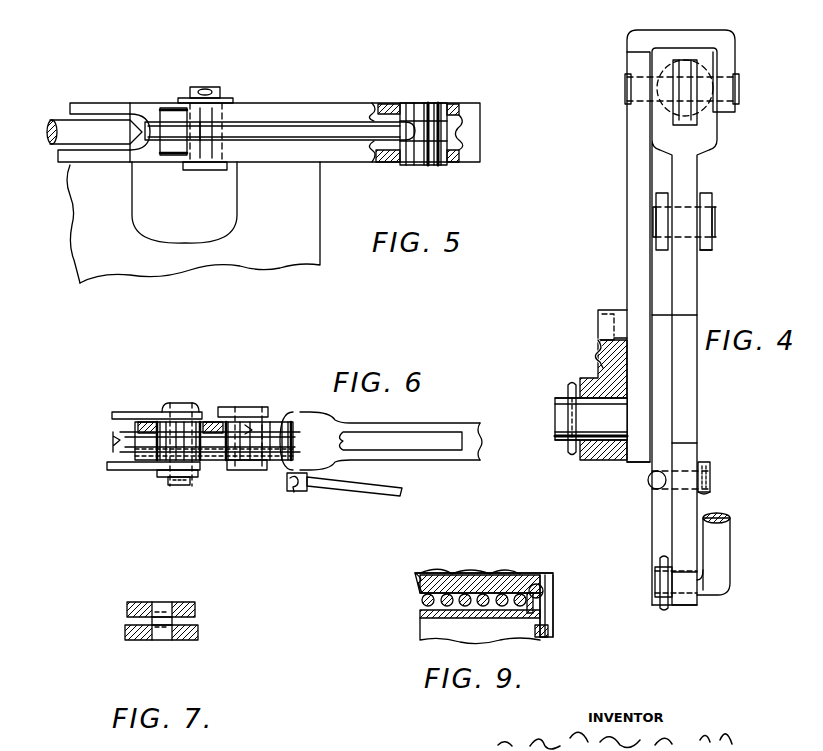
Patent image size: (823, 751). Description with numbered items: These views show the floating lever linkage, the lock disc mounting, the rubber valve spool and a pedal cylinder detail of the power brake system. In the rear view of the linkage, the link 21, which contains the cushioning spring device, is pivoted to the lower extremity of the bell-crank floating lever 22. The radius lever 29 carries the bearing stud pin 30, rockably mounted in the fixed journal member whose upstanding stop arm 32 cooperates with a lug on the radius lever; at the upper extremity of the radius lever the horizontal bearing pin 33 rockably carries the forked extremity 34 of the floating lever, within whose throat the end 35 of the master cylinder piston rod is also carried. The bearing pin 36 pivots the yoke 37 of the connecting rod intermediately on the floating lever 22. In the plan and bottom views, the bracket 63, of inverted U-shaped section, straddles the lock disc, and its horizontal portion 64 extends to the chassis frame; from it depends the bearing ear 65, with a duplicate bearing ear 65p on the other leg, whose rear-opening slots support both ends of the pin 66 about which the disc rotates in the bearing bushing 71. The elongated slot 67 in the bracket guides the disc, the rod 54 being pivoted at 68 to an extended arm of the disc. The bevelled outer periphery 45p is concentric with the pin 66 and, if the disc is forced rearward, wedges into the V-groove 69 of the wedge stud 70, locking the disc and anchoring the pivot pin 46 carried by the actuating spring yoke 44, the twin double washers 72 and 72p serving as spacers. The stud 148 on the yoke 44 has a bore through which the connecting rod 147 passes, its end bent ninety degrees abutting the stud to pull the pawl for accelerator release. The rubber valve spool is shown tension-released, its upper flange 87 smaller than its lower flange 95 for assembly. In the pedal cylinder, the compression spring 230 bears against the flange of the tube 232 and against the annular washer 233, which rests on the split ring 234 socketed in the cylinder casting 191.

In FIG. 4, the link 21 is at (730, 552).
In FIG. 4, the floating lever 22 is at (697, 428).
In FIG. 4, the radius lever 29 is at (627, 208).
In FIG. 4, the bearing stud pin 30 is at (558, 434).
In FIG. 4, the stop arm 32 is at (597, 318).
In FIG. 4, the horizontal bearing pin 33 is at (624, 85).
In FIG. 4, the forked extremity 34 is at (717, 125).
In FIG. 4, the end of master cylinder piston rod 35 is at (686, 58).
In FIG. 4, the bearing pin 36 is at (713, 222).
In FIG. 4, the yoke 37 is at (710, 248).
In FIG. 6, the actuating spring yoke 44 is at (428, 458).
In FIG. 5, the outer periphery of disc 45p is at (318, 120).
In FIG. 6, the pivot pin 46 is at (255, 470).
In FIG. 5, the rod 54 is at (55, 125).
In FIG. 5, the bracket 63 is at (282, 102).
In FIG. 5, the horizontal portion 64 is at (312, 260).
In FIG. 6, the bearing ear 65 is at (136, 411).
In FIG. 6, the duplicate bearing ear portion 65p is at (128, 472).
In FIG. 5, the pin 66 is at (220, 96).
In FIG. 6, the pin 66 is at (182, 486).
In FIG. 5, the elongated slot 67 is at (370, 150).
In FIG. 5, the pivot 68 is at (167, 108).
In FIG. 5, the V-groove 69 is at (415, 122).
In FIG. 5, the wedge stud 70 is at (440, 164).
In FIG. 6, the bearing bushing 71 is at (206, 422).
In FIG. 6, the double washer 72 is at (137, 427).
In FIG. 6, the double washer 72p is at (210, 462).
In FIG. 7, the upper flange of rubber valve spool 87 is at (190, 611).
In FIG. 7, the lower flange of rubber valve spool 95 is at (198, 633).
In FIG. 6, the connecting rod 147 is at (380, 494).
In FIG. 6, the stud 148 is at (300, 492).
In FIG. 9, the cylinder casting 191 is at (555, 580).
In FIG. 9, the compression spring 230 is at (448, 590).
In FIG. 9, the tube 232 is at (545, 628).
In FIG. 9, the annular washer 233 is at (528, 595).
In FIG. 9, the split ring 234 is at (537, 585).